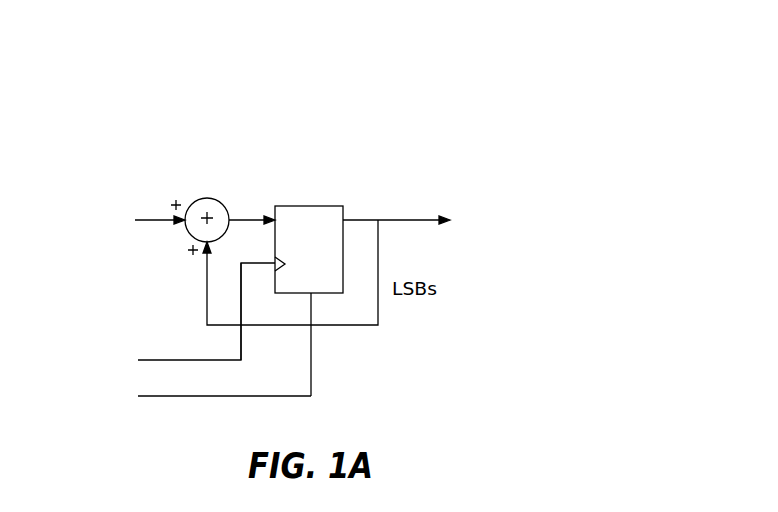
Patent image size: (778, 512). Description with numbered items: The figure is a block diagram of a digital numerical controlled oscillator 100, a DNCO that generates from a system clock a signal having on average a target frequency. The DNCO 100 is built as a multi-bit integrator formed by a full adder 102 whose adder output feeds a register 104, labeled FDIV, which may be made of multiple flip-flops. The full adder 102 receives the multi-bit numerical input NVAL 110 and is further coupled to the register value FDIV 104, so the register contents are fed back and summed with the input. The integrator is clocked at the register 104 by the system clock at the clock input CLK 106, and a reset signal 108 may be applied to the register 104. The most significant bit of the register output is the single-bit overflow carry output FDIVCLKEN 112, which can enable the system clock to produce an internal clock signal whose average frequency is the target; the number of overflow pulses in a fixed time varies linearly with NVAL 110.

The digital numerical controlled oscillator 100 is at (558, 107).
The full adder 102 is at (207, 198).
The register 104 is at (343, 206).
The clock input 106 is at (170, 317).
The reset signal 108 is at (178, 395).
The multi-bit numerical input 110 is at (110, 220).
The overflow output 112 is at (474, 225).